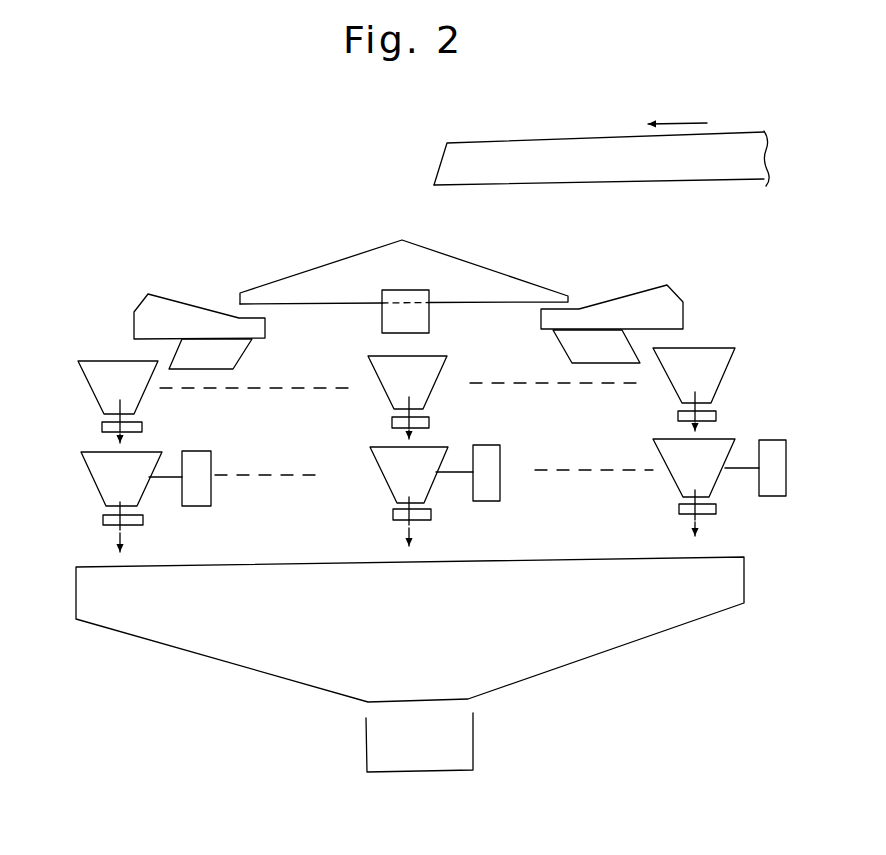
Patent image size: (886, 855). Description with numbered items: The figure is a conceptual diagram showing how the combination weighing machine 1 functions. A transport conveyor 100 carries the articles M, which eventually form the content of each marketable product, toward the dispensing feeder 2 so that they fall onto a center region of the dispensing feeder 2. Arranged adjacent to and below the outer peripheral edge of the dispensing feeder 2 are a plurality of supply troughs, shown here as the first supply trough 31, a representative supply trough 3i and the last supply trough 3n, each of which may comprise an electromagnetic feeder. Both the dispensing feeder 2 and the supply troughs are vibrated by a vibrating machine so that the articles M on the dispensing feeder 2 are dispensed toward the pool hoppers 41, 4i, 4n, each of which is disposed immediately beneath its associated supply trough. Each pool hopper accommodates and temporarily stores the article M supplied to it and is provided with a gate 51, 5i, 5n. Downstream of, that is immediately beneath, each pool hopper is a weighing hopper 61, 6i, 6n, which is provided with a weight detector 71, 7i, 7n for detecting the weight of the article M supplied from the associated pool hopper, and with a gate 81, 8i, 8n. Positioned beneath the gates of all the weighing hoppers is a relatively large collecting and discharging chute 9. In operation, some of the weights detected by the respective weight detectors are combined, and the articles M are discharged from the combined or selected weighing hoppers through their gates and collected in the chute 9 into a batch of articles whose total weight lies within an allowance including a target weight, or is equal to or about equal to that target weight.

The combination weighing machine 1 is at (228, 210).
The dispensing feeder 2 is at (333, 262).
The supply trough 3i is at (430, 328).
The supply trough 31 is at (140, 300).
The supply trough 3n is at (668, 292).
The pool hopper 41 is at (80, 375).
The pool hopper 4i is at (433, 370).
The pool hopper 4n is at (725, 362).
The gate 51 is at (102, 427).
The gate 5i is at (430, 422).
The gate 5n is at (717, 414).
The weighing hopper 61 is at (90, 478).
The weighing hopper 6i is at (375, 455).
The weighing hopper 6n is at (673, 482).
The weight detector 71 is at (210, 502).
The weight detector 7i is at (495, 492).
The weight detector 7n is at (782, 458).
The gate 81 is at (102, 520).
The gate 8i is at (393, 512).
The gate 8n is at (717, 513).
The collecting and discharging chute 9 is at (672, 628).
The transport conveyor 100 is at (546, 184).
The articles M is at (402, 220).